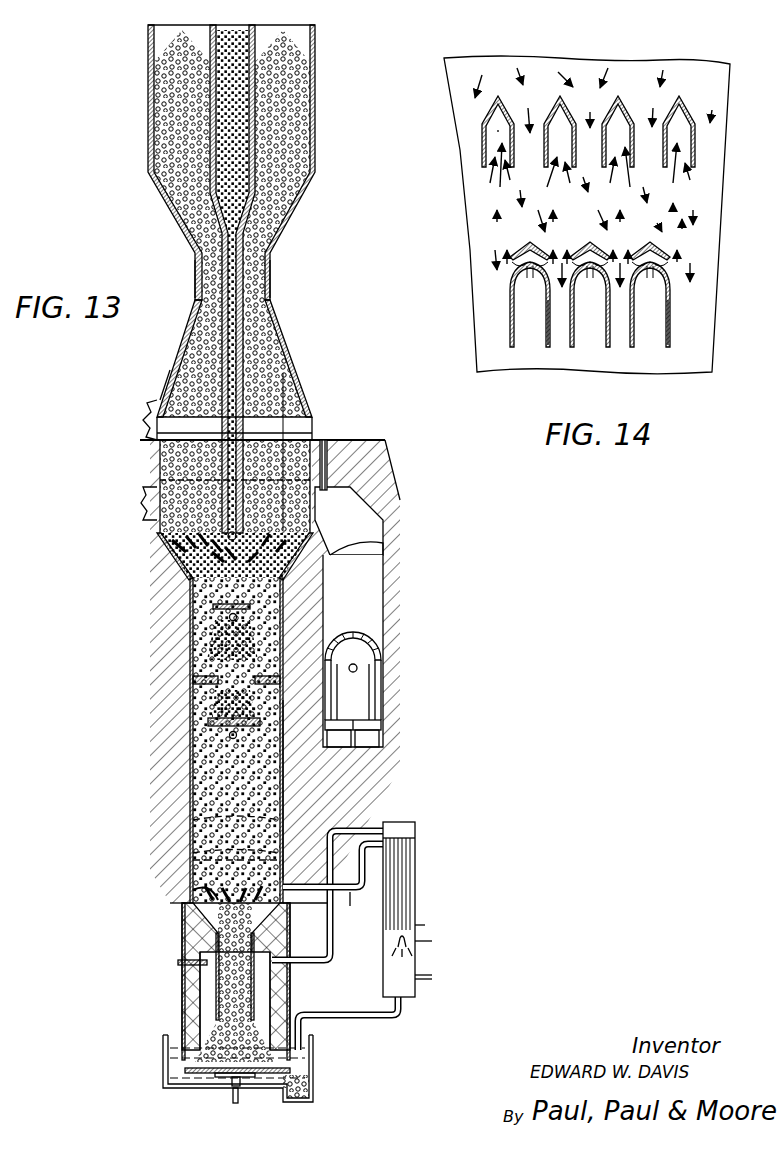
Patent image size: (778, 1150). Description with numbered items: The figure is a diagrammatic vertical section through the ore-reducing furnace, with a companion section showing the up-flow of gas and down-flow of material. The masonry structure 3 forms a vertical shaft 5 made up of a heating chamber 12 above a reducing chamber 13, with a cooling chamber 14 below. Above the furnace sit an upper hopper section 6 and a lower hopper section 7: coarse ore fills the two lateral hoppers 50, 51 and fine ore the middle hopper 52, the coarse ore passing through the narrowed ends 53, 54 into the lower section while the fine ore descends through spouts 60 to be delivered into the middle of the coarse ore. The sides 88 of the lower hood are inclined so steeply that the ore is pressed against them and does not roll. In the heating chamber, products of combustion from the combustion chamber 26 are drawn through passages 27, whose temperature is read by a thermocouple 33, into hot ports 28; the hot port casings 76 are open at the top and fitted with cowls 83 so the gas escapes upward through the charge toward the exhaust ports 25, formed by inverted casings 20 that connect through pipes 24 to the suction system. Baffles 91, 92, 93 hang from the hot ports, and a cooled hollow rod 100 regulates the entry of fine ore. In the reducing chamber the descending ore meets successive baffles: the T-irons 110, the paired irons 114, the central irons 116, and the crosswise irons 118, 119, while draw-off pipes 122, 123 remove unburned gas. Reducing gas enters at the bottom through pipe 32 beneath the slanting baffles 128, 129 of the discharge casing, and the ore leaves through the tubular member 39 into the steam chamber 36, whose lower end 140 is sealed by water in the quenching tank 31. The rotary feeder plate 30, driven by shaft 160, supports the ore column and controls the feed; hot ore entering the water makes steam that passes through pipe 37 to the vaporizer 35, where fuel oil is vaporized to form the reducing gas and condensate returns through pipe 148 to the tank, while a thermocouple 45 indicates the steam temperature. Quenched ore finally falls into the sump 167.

In FIG. 13, the masonry structure 3 is at (300, 671).
In FIG. 13, the vertical shaft 5 is at (285, 800).
In FIG. 13, the upper hopper section 6 is at (318, 143).
In FIG. 13, the lower hopper section 7 is at (297, 355).
In FIG. 13, the heating chamber 12 is at (160, 468).
In FIG. 13, the reducing chamber 13 is at (190, 777).
In FIG. 13, the cooling chamber 14 is at (270, 384).
In FIG. 13, the exhaust port casing 20 is at (172, 415).
In FIG. 14, the exhaust port casing 20 is at (560, 96).
In FIG. 13, the exhaust pipe 24 is at (141, 422).
In FIG. 13, the exhaust port 25 is at (297, 423).
In FIG. 14, the exhaust port 25 is at (498, 130).
In FIG. 13, the combustion chamber 26 is at (370, 590).
In FIG. 13, the passage 27 is at (372, 520).
In FIG. 13, the hot port 28 is at (172, 522).
In FIG. 14, the hot port 28 is at (530, 305).
In FIG. 13, the rotary feeder plate 30 is at (205, 1074).
In FIG. 13, the quenching tank 31 is at (310, 1078).
In FIG. 13, the reducing gas pipe 32 is at (333, 885).
In FIG. 13, the thermocouple 33 is at (327, 440).
In FIG. 13, the vaporizer 35 is at (408, 830).
In FIG. 13, the steam chamber 36 is at (207, 988).
In FIG. 13, the steam pipe 37 is at (328, 963).
In FIG. 13, the tubular member 39 is at (217, 1000).
In FIG. 13, the thermocouple 45 is at (180, 963).
In FIG. 13, the coarse ore hopper 50 is at (156, 105).
In FIG. 13, the coarse ore hopper 51 is at (304, 106).
In FIG. 13, the fine ore hopper 52 is at (240, 30).
In FIG. 13, the hopper lower end 53 is at (198, 268).
In FIG. 13, the hopper lower end 54 is at (267, 283).
In FIG. 13, the spout 60 is at (240, 270).
In FIG. 14, the hot port casing 76 is at (670, 315).
In FIG. 14, the cowl 83 is at (590, 243).
In FIG. 13, the hood side 88 is at (172, 368).
In FIG. 13, the baffle 91 is at (180, 545).
In FIG. 13, the baffle 92 is at (198, 556).
In FIG. 13, the baffle 93 is at (212, 572).
In FIG. 13, the hollow rod 100 is at (213, 606).
In FIG. 13, the T-iron baffle 110 is at (229, 617).
In FIG. 13, the baffle irons 114 is at (200, 680).
In FIG. 13, the baffle irons 116 is at (208, 721).
In FIG. 13, the baffle irons 118 is at (200, 818).
In FIG. 13, the baffle irons 119 is at (200, 853).
In FIG. 13, the draw-off pipe 122 is at (222, 628).
In FIG. 13, the draw-off pipe 123 is at (229, 736).
In FIG. 13, the slanting baffle 128 is at (210, 890).
In FIG. 13, the slanting baffle 129 is at (205, 890).
In FIG. 13, the steam chamber casing lower end 140 is at (183, 1048).
In FIG. 13, the condensate pipe 148 is at (362, 1018).
In FIG. 13, the feeder plate shaft 160 is at (236, 1104).
In FIG. 13, the sump 167 is at (300, 1098).